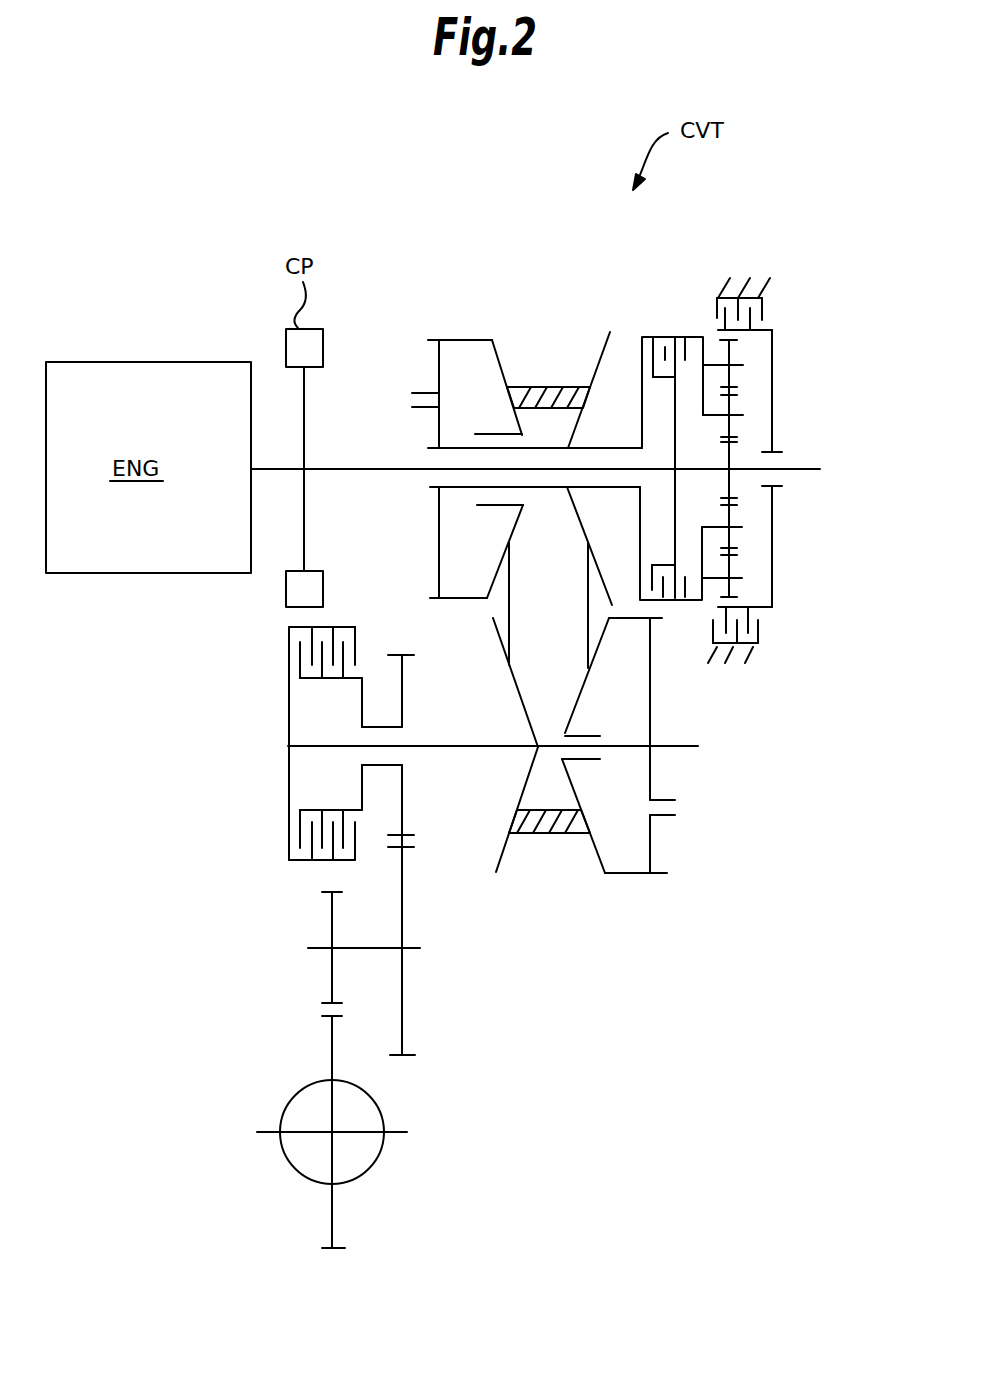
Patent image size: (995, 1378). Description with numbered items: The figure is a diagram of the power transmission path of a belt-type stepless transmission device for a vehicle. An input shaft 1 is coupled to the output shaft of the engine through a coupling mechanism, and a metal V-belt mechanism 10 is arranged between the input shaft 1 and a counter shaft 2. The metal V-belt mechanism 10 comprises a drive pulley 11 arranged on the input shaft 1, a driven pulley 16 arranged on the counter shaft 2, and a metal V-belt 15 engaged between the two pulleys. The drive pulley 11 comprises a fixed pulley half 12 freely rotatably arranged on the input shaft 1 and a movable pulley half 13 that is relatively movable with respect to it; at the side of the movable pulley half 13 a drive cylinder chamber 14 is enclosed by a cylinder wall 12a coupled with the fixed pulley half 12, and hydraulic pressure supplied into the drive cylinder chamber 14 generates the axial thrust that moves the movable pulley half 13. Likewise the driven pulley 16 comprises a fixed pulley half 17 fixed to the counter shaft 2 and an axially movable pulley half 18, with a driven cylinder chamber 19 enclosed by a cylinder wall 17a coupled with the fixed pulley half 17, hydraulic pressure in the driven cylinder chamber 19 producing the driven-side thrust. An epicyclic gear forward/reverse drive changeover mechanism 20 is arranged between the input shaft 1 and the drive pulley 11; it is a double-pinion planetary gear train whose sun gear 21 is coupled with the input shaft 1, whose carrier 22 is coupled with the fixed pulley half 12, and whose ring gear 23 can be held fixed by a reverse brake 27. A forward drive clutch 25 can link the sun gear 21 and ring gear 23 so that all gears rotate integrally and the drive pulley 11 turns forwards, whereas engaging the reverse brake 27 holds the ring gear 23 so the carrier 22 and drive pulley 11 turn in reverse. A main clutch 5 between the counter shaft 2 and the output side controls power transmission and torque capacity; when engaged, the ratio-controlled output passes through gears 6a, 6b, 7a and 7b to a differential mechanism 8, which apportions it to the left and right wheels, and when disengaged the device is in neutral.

The input shaft 1 is at (367, 470).
The counter shaft 2 is at (453, 748).
The main clutch 5 is at (268, 830).
The gear 6a is at (403, 672).
The gear 6b is at (410, 1056).
The gear 7a is at (332, 908).
The gear 7b is at (332, 1050).
The differential mechanism 8 is at (372, 1165).
The metal V-belt mechanism 10 is at (518, 262).
The drive pulley 11 is at (494, 439).
The fixed pulley half 12 is at (598, 352).
The cylinder wall 12a is at (439, 424).
The movable pulley half 13 is at (493, 351).
The drive cylinder chamber 14 is at (484, 415).
The metal V-belt 15 is at (508, 603).
The driven pulley 16 is at (595, 895).
The fixed pulley half 17 is at (497, 872).
The cylinder wall 17a is at (651, 705).
The movable pulley half 18 is at (598, 852).
The driven cylinder chamber 19 is at (626, 718).
The epicyclic gear forward/reverse drive changeover mechanism 20 is at (793, 265).
The sun gear 21 is at (730, 457).
The carrier 22 is at (703, 378).
The ring gear 23 is at (760, 332).
The forward drive clutch 25 is at (663, 357).
The reverse brake 27 is at (763, 307).